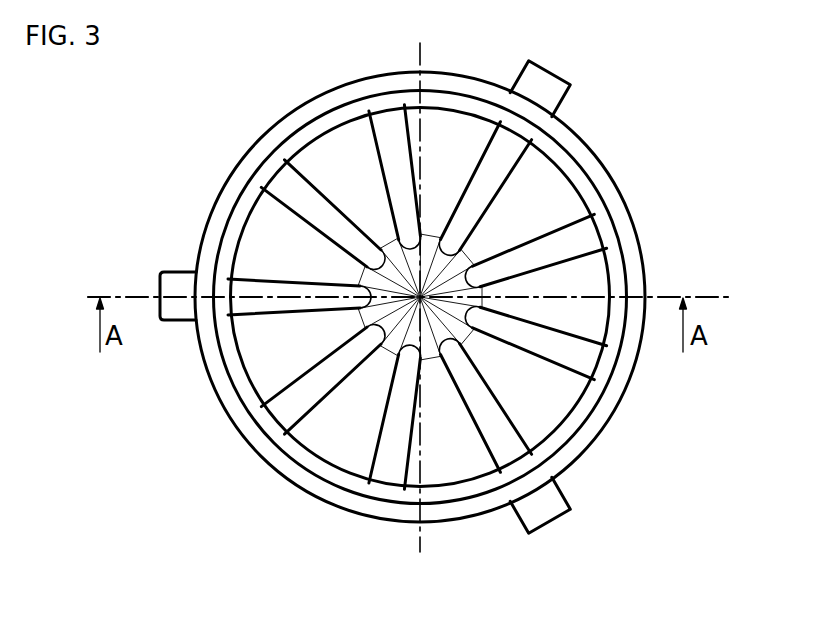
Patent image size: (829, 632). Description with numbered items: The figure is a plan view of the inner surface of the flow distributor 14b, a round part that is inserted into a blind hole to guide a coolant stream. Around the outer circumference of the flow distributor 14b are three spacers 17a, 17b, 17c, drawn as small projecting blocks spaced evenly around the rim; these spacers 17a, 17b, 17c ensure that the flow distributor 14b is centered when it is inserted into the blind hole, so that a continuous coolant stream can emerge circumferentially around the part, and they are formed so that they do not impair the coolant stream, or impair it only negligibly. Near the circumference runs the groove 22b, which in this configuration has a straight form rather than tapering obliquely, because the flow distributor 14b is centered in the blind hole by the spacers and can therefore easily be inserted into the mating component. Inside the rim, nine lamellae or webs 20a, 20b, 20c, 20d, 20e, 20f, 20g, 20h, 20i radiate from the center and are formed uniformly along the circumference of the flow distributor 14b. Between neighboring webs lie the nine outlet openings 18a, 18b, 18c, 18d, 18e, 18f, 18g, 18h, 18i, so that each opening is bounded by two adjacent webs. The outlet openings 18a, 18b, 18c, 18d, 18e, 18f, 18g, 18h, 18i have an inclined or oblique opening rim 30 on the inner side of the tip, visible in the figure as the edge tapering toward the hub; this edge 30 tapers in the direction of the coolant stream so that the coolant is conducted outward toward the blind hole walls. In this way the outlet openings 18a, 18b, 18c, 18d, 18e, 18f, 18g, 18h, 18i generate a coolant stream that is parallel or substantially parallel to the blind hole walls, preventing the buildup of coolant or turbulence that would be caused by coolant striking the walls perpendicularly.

The flow distributor 14b is at (481, 262).
The groove 22b is at (467, 92).
The opening rim 30 is at (390, 250).
The spacer 17a is at (170, 280).
The spacer 17b is at (542, 78).
The spacer 17c is at (548, 512).
The outlet opening 18a is at (330, 136).
The outlet opening 18b is at (430, 123).
The outlet opening 18c is at (558, 186).
The outlet opening 18d is at (596, 279).
The outlet opening 18e is at (558, 417).
The outlet opening 18f is at (462, 473).
The outlet opening 18g is at (328, 460).
The outlet opening 18h is at (250, 369).
The outlet opening 18i is at (250, 226).
The web 20a is at (390, 128).
The web 20b is at (515, 143).
The web 20c is at (585, 235).
The web 20d is at (583, 356).
The web 20e is at (508, 449).
The web 20f is at (388, 470).
The web 20g is at (282, 413).
The web 20h is at (240, 285).
The web 20i is at (287, 183).